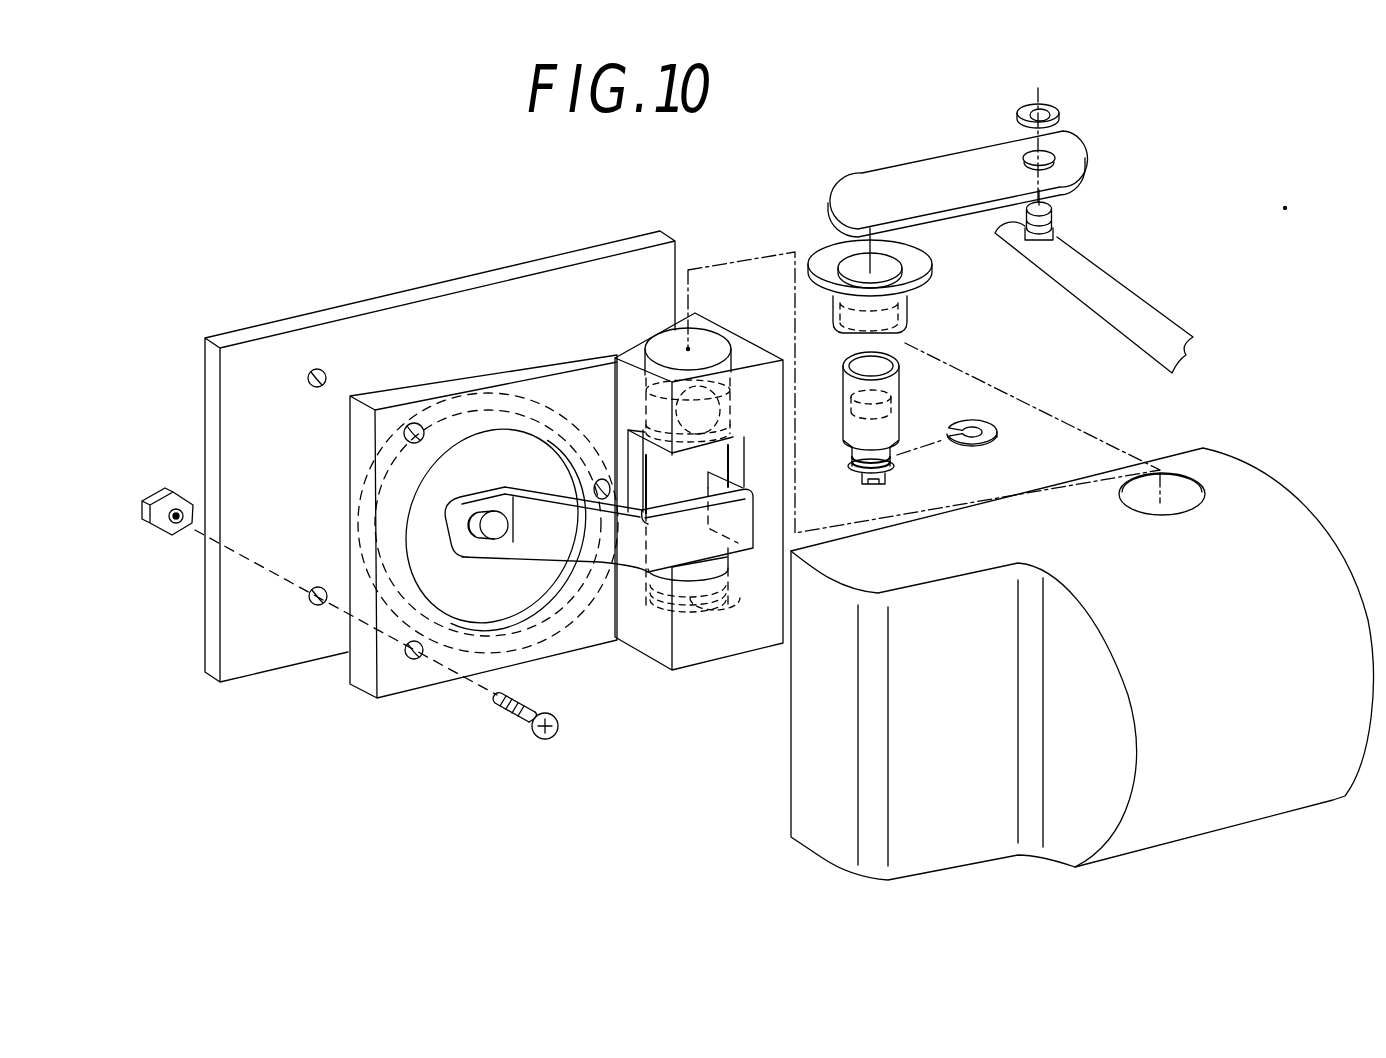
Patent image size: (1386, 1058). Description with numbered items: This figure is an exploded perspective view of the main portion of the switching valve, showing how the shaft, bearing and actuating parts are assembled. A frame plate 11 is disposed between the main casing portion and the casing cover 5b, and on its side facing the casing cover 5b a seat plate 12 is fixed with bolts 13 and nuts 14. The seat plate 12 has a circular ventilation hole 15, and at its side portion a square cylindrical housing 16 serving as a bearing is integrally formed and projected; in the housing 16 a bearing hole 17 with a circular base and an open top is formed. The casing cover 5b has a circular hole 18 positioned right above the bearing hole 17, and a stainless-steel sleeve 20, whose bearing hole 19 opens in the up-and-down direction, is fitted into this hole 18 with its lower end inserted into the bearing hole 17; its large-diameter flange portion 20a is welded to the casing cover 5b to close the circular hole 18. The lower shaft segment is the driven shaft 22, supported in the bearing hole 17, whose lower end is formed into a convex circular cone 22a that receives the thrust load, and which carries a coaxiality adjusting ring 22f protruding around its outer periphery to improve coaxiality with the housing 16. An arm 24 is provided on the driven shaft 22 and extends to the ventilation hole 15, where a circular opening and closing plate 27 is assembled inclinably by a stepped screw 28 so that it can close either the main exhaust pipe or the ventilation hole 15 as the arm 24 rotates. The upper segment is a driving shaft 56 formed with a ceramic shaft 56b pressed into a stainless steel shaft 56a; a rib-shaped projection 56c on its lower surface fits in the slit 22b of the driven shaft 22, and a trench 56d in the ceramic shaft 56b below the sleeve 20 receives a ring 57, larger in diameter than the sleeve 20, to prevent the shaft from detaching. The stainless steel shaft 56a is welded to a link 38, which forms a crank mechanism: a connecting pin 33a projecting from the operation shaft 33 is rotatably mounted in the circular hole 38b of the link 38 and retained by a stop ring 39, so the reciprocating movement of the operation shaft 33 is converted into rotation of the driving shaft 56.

The casing cover 5b is at (1267, 490).
The frame plate 11 is at (266, 320).
The seat plate 12 is at (400, 702).
The bolts 13 is at (512, 714).
The nuts 14 is at (152, 528).
The ventilation hole 15 is at (514, 616).
The housing 16 is at (720, 650).
The bearing hole 17 is at (712, 343).
The circular hole 18 is at (1200, 480).
The bearing hole 19 is at (848, 265).
The sleeve 20 is at (906, 305).
The flange portion 20a is at (923, 258).
The driven shaft 22 is at (657, 463).
The convex circular cone 22a is at (700, 613).
The slit 22b is at (748, 368).
The coaxiality adjusting ring 22f is at (728, 404).
The arm 24 is at (600, 556).
The opening and closing plate 27 is at (465, 597).
The stepped screw 28 is at (495, 518).
The operation shaft 33 is at (1132, 287).
The connecting pin 33a is at (1050, 235).
The link 38 is at (957, 150).
The circular hole 38b is at (1055, 157).
The stop ring 39 is at (1047, 108).
The driving shaft 56 is at (893, 429).
The stainless steel shaft 56a is at (843, 367).
The ceramic shaft 56b is at (893, 465).
The rib-shaped projection 56c is at (862, 477).
The trench 56d is at (852, 458).
The ring 57 is at (987, 440).